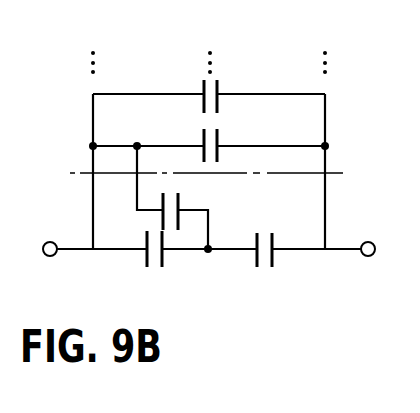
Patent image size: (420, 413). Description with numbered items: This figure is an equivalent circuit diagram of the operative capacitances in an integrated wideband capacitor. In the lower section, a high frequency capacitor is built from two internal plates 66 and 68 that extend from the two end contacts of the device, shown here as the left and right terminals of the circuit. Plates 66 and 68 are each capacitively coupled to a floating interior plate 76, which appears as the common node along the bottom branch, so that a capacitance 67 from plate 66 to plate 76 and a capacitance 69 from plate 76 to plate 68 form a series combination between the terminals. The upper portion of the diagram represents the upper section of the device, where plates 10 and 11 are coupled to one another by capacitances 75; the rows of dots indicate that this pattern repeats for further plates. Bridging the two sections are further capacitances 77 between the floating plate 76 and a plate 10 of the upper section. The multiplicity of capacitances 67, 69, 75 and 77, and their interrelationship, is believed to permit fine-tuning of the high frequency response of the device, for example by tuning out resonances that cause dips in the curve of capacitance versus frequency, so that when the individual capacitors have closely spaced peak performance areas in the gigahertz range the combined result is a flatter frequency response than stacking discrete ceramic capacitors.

The plate 10 is at (122, 94).
The plate 11 is at (250, 94).
The capacitances 75 is at (222, 136).
The capacitances 77 is at (180, 198).
The internal plate 66 is at (278, 246).
The capacitance 67 is at (273, 262).
The internal plate 68 is at (108, 252).
The capacitance 69 is at (163, 256).
The floating interior plate 76 is at (242, 252).